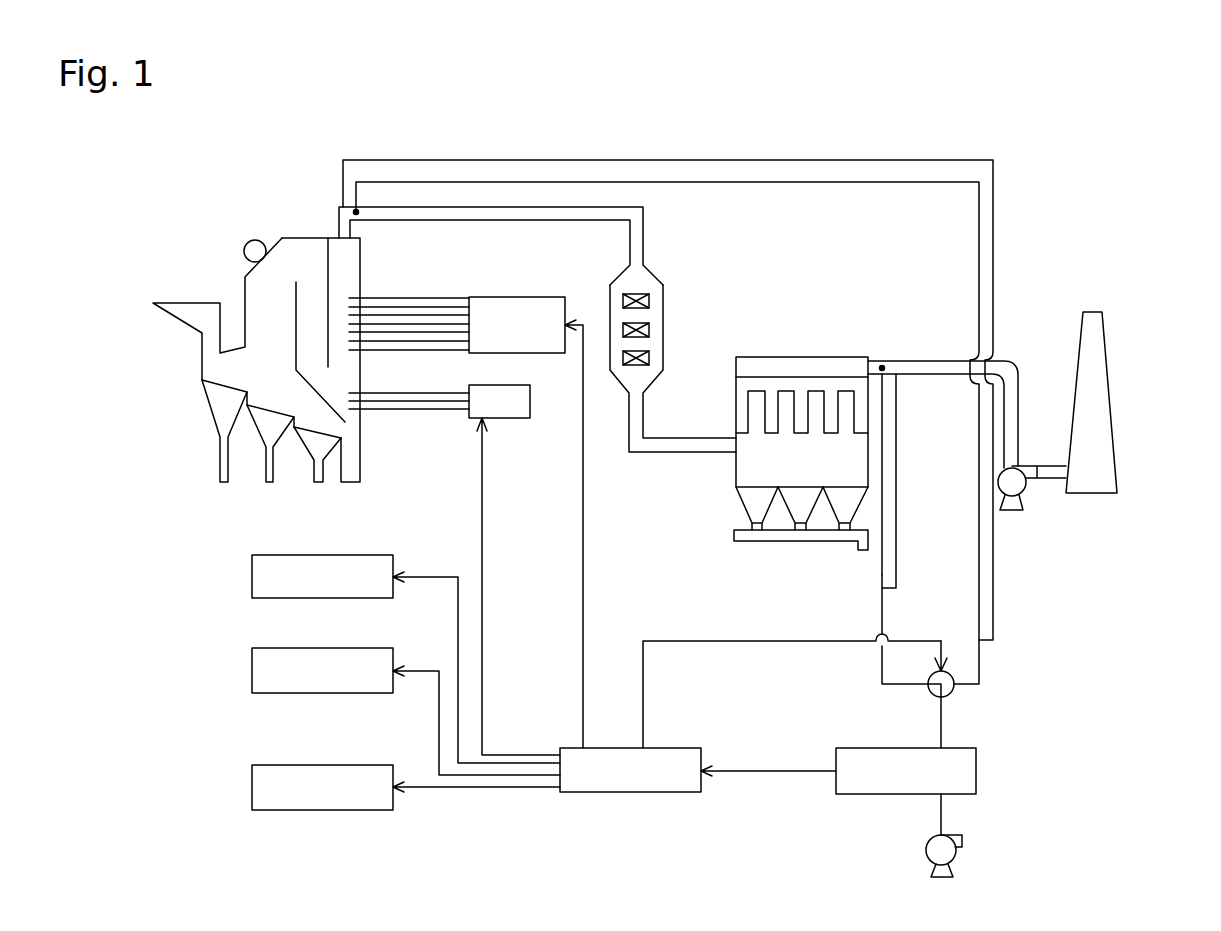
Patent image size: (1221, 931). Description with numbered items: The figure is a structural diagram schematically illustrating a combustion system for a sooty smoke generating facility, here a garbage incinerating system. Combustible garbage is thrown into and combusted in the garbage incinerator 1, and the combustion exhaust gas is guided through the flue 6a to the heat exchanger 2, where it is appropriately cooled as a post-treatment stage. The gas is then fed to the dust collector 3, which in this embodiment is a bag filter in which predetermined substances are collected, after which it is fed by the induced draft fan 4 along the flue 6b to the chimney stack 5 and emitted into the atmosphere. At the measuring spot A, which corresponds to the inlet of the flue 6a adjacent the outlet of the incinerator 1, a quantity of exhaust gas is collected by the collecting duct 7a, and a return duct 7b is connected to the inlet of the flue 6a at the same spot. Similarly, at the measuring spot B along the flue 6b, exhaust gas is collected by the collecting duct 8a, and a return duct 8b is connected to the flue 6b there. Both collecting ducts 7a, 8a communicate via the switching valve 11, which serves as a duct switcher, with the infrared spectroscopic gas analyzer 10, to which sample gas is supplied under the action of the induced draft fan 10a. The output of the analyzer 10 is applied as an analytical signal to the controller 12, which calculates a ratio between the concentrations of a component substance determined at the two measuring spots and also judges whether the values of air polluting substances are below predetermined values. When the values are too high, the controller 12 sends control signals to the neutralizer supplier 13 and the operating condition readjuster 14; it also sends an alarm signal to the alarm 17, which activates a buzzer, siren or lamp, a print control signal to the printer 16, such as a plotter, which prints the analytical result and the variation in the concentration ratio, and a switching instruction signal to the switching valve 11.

The garbage incinerator 1 is at (230, 368).
The heat exchanger 2 is at (647, 282).
The dust collector 3 is at (750, 475).
The induced draft fan 4 is at (1020, 483).
The chimney stack 5 is at (1103, 407).
The flue 6a is at (407, 215).
The flue 6b is at (920, 368).
The collecting duct 7a is at (419, 181).
The return duct 7b is at (545, 160).
The collecting duct 8a is at (880, 572).
The return duct 8b is at (893, 533).
The infrared spectroscopic gas analyzer 10 is at (968, 768).
The induced draft fan 10a is at (937, 850).
The switching valve 11 is at (942, 680).
The controller 12 is at (657, 757).
The neutralizer supplier 13 is at (485, 297).
The operating condition readjuster 14 is at (472, 418).
The printer 16 is at (270, 662).
The alarm 17 is at (265, 563).
The measuring spot A is at (339, 213).
The measuring spot B is at (889, 368).